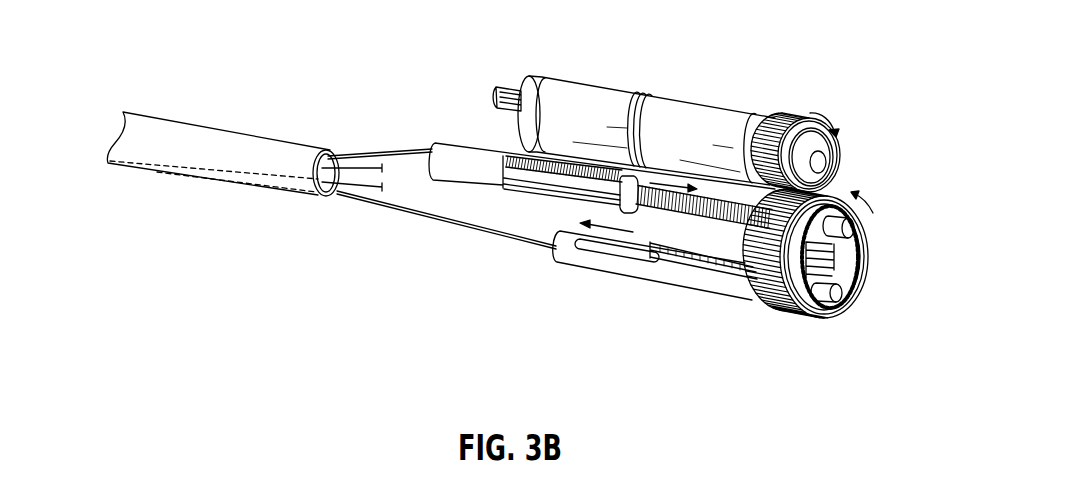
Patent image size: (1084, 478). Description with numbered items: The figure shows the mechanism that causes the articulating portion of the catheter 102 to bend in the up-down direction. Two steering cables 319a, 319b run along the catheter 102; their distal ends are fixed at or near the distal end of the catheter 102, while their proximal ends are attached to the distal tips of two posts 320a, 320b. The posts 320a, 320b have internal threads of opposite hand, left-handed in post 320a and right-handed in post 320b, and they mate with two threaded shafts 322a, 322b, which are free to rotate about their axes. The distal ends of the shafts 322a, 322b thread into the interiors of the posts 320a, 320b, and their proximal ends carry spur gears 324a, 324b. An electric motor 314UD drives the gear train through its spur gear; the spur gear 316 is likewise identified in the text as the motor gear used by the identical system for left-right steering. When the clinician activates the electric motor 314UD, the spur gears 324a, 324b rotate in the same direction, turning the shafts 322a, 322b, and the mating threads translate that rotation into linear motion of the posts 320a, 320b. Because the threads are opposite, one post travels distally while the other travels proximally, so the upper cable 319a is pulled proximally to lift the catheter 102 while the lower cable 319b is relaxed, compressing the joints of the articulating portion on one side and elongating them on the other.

The catheter 102 is at (240, 133).
The steering cable 319a is at (399, 151).
The steering cable 319b is at (450, 222).
The post 320a is at (457, 144).
The post 320b is at (651, 285).
The electric motor 314UD is at (692, 102).
The spur gear 316 is at (795, 111).
The threaded shaft 322a is at (647, 212).
The threaded shaft 322b is at (833, 193).
The spur gear 324a is at (851, 231).
The spur gear 324b is at (843, 295).